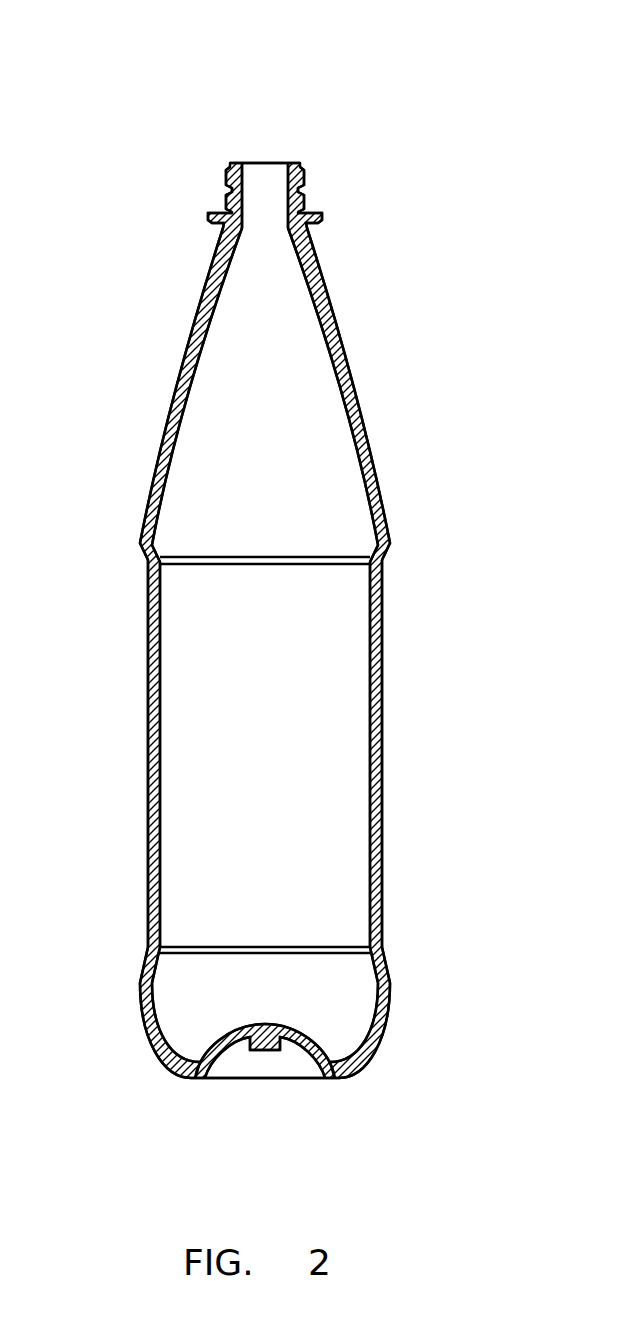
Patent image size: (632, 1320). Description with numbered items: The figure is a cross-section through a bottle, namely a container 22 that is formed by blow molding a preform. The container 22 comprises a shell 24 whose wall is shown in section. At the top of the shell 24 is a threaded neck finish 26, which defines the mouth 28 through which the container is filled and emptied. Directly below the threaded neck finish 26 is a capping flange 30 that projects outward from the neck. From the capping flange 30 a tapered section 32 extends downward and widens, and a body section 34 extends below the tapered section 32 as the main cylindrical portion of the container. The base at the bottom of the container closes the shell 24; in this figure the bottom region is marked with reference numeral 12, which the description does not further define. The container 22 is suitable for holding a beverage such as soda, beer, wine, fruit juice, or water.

The base with push-up dome 12 is at (253, 1073).
The container 22 is at (395, 477).
The shell 24 is at (394, 684).
The threaded neck finish 26 is at (302, 190).
The mouth 28 is at (263, 163).
The capping flange 30 is at (321, 216).
The tapered section 32 is at (184, 342).
The body section 34 is at (147, 800).